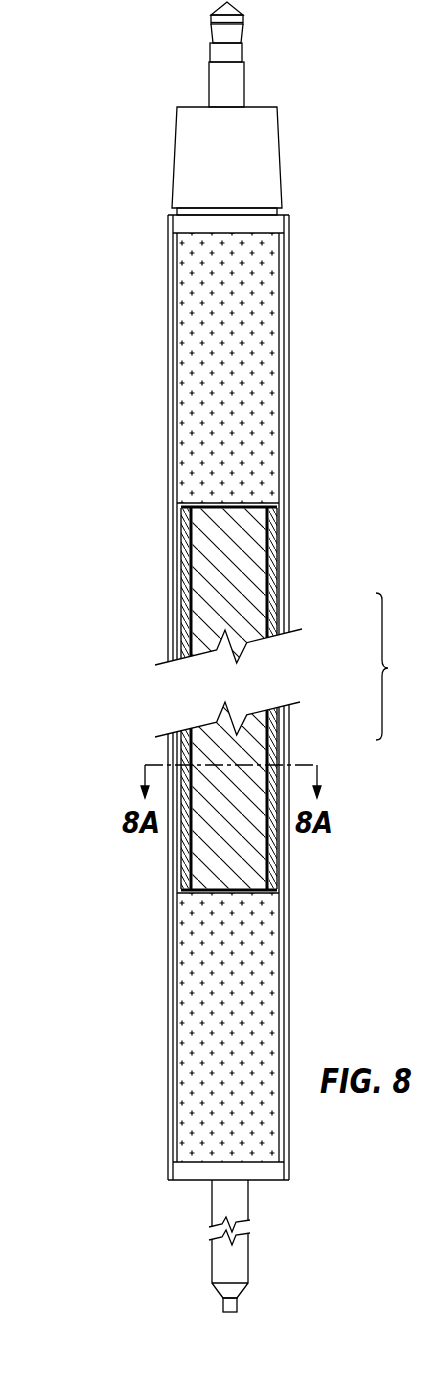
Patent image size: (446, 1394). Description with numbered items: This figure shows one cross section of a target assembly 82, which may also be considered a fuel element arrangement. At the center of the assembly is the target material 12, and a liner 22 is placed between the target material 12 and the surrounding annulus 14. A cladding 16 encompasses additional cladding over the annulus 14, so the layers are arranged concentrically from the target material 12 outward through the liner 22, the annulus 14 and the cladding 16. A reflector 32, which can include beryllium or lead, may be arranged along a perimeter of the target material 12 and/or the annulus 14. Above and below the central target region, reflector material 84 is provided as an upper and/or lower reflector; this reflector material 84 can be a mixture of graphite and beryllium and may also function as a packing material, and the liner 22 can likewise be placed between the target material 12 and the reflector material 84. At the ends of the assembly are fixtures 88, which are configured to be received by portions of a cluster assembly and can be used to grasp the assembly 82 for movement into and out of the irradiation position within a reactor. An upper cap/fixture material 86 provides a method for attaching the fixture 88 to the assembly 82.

The target assembly 82 is at (118, 252).
The reflector material 84 is at (250, 308).
The upper cap/fixture 86 is at (282, 155).
The fixture 88 is at (208, 82).
The target material 12 is at (238, 545).
The annulus 14 is at (182, 597).
The cladding 16 is at (178, 648).
The liner 22 is at (252, 505).
The reflector 32 is at (177, 660).